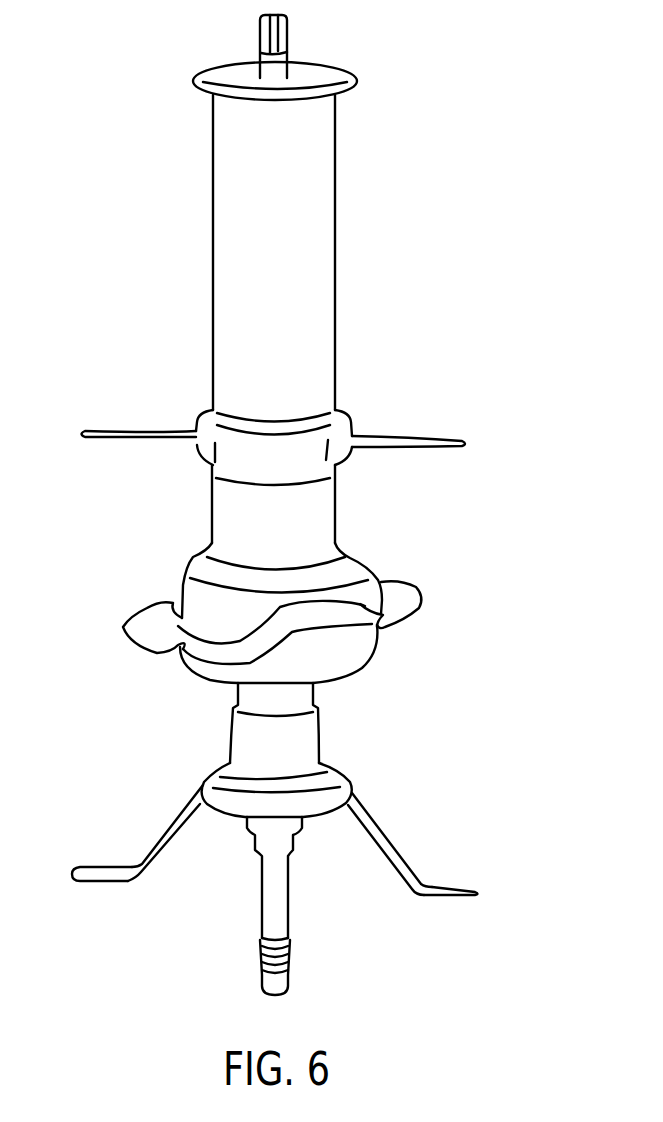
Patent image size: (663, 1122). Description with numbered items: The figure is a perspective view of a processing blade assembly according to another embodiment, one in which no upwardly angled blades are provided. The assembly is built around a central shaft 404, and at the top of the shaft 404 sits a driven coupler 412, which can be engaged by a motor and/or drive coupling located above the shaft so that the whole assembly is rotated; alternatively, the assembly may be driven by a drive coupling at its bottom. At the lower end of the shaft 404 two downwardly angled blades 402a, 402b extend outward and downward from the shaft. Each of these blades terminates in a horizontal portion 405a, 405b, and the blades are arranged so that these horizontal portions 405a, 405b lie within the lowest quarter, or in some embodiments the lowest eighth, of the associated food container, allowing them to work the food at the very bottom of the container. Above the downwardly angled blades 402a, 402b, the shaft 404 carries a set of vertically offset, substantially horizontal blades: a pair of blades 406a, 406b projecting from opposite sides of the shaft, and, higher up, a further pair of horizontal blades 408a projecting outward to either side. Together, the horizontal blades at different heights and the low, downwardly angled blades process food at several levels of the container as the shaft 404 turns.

The driven coupler 412 is at (273, 26).
The shaft 404 is at (318, 268).
The substantially horizontal blade 408a is at (97, 440).
The substantially horizontal blade 406a is at (131, 632).
The substantially horizontal blade 406b is at (415, 605).
The downwardly angled blade 402a is at (165, 835).
The downwardly angled blade 402b is at (383, 838).
The horizontal portion 405a is at (85, 878).
The horizontal portion 405b is at (445, 896).